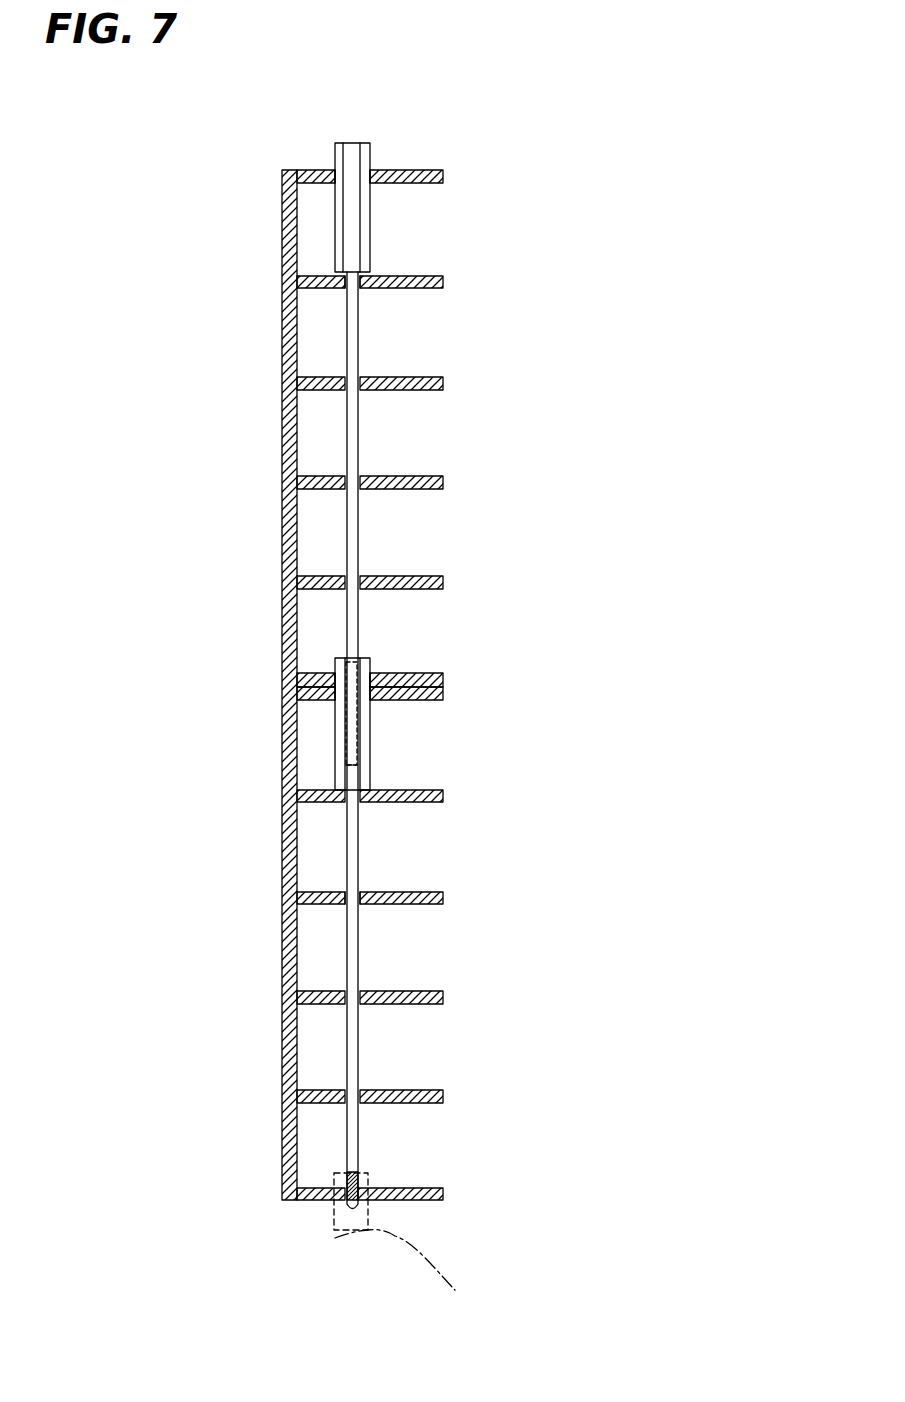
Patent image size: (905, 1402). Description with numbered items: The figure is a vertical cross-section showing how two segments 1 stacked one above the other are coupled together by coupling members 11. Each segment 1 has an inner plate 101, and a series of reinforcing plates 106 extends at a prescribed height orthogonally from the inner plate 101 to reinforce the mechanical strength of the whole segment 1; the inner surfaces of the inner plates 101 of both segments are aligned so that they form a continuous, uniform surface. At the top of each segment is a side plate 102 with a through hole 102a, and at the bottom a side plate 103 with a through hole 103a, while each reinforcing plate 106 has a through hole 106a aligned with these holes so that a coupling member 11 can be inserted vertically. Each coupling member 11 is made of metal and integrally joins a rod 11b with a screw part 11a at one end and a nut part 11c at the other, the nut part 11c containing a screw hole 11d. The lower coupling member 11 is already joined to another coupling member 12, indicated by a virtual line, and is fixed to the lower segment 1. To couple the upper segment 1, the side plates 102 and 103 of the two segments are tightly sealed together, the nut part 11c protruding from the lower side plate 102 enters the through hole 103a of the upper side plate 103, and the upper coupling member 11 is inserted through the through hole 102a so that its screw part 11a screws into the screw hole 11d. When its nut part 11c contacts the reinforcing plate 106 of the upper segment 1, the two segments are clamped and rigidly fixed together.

The segment 1 is at (226, 461).
The inner plate 101 is at (283, 413).
The side plate 102 is at (410, 170).
The through hole 102a is at (333, 170).
The side plate 103 is at (440, 673).
The through hole 103a is at (368, 662).
The reinforcing plate 106 is at (427, 288).
The through hole 106a is at (360, 288).
The coupling member 11 is at (384, 438).
The screw part 11a is at (337, 670).
The rod 11b is at (358, 527).
The nut part 11c is at (370, 233).
The screw hole 11d is at (345, 758).
The coupling member 12 is at (417, 1238).